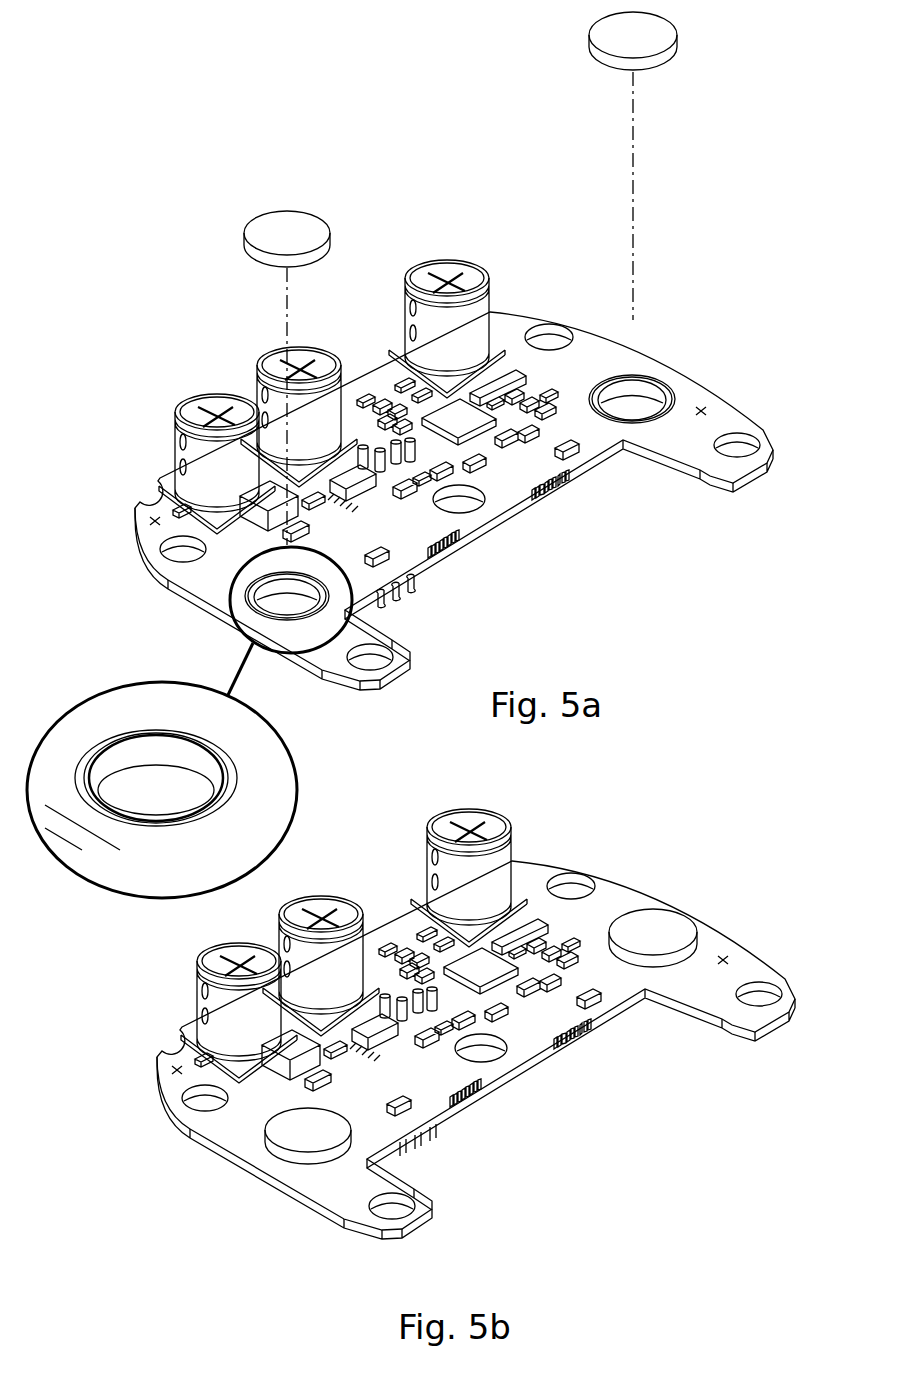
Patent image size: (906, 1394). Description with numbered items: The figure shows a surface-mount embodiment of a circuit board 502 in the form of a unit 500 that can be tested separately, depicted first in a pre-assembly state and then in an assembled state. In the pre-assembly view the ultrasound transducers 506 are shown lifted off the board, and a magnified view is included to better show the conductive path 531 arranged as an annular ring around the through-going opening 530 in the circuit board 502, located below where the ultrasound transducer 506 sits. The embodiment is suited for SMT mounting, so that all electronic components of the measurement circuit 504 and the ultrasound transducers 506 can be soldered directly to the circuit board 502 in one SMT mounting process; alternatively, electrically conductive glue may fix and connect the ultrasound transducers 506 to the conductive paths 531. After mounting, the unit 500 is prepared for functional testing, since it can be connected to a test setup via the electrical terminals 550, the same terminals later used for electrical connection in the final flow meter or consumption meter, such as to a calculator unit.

In FIG. 5b, the unit 500 is at (471, 1024).
In FIG. 5a, the circuit board 502 is at (208, 578).
In FIG. 5b, the circuit board 502 is at (244, 1118).
In FIG. 5a, the measurement circuit 504 is at (380, 392).
In FIG. 5b, the measurement circuit 504 is at (405, 960).
In FIG. 5a, the ultrasound transducers 506 is at (287, 238).
In FIG. 5b, the ultrasound transducers 506 is at (312, 1137).
In FIG. 5a, the through-going opening 530 is at (630, 395).
In FIG. 5a, the conductive path 531 is at (222, 780).
In FIG. 5b, the electrical terminals 550 is at (432, 1150).